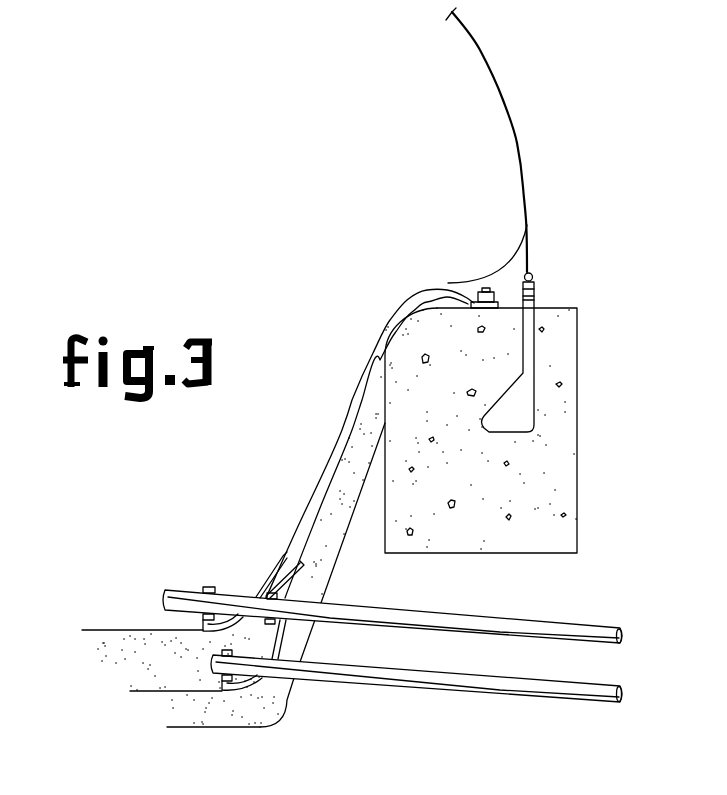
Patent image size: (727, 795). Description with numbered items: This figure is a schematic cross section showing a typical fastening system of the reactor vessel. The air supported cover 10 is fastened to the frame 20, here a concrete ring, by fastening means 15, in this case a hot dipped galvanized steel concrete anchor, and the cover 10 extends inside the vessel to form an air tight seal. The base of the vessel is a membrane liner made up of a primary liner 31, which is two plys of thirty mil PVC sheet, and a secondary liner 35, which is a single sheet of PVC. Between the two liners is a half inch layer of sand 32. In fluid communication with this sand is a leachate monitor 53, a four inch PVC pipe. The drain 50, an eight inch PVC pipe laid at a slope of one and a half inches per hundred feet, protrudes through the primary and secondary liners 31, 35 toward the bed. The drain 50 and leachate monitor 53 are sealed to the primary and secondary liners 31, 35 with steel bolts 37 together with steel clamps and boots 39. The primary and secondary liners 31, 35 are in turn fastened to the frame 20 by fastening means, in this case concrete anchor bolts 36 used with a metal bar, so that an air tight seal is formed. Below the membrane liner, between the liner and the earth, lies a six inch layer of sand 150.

The air supported cover 10 is at (508, 117).
The fastening means 15 is at (533, 369).
The frame 20 is at (558, 463).
The primary liner 31 is at (366, 368).
The layer of sand 32 is at (110, 655).
The secondary liner 35 is at (167, 691).
The concrete anchor bolts 36 is at (478, 293).
The steel bolts 37 is at (207, 587).
The boots 39 is at (243, 588).
The drain 50 is at (528, 619).
The leachate monitor 53 is at (518, 680).
The layer of sand 150 is at (265, 702).